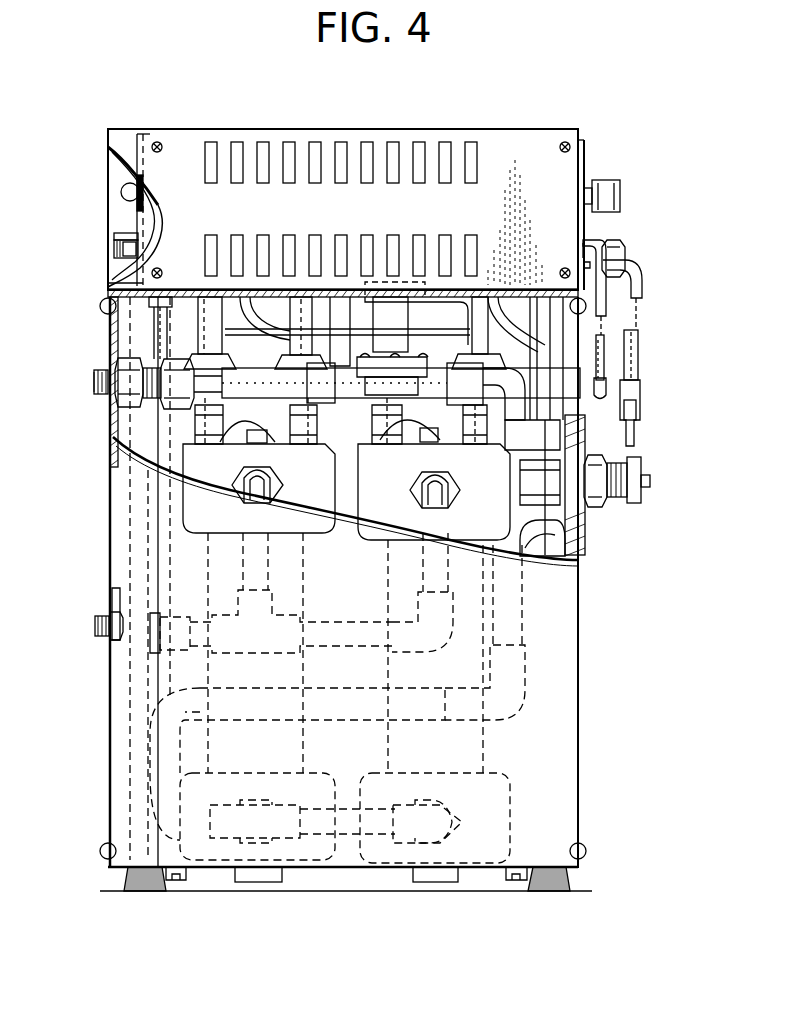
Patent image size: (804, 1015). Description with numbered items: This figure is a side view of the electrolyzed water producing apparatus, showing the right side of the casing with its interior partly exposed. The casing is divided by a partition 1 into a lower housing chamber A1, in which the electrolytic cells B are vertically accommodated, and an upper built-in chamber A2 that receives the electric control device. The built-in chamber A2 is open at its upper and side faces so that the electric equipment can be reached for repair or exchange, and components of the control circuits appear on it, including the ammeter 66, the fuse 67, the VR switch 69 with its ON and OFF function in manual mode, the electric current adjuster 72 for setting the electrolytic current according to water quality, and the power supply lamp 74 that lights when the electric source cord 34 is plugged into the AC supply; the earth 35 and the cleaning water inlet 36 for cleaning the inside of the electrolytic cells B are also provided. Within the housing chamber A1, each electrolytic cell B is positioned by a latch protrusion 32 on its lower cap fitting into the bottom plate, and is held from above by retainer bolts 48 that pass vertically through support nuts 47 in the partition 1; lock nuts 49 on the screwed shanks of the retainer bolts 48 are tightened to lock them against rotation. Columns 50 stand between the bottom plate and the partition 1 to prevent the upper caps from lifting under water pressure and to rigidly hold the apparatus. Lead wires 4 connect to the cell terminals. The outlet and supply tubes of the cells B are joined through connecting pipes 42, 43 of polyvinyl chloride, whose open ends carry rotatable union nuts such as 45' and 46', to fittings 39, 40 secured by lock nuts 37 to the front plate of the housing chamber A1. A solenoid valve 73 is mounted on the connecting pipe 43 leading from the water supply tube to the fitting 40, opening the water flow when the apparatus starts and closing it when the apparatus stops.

The partition 1 is at (302, 295).
The lead wire 4 is at (236, 444).
The latch protrusion 32 is at (258, 882).
The electric source cord 34 is at (640, 370).
The earth 35 is at (608, 348).
The cleaning water inlet 36 is at (648, 484).
The lock nut 37 is at (113, 352).
The fitting 39 is at (106, 642).
The fitting 40 is at (102, 392).
The connecting pipe 42 is at (322, 645).
The connecting pipe 43 is at (514, 710).
The union nut 45' is at (175, 307).
The union nut 46' is at (176, 614).
The support nut 47 is at (292, 352).
The retainer bolt 48 is at (195, 424).
The lock nut 49 is at (248, 384).
The column 50 is at (524, 418).
The ammeter 66 is at (137, 222).
The fuse 67 is at (116, 249).
The VR switch 69 is at (120, 236).
The electric current adjuster 72 is at (620, 202).
The solenoid valve 73 is at (409, 318).
The power supply lamp 74 is at (138, 188).
The housing chamber A1 is at (562, 535).
The built-in chamber A2 is at (530, 136).
The electrolytic cell B is at (385, 590).